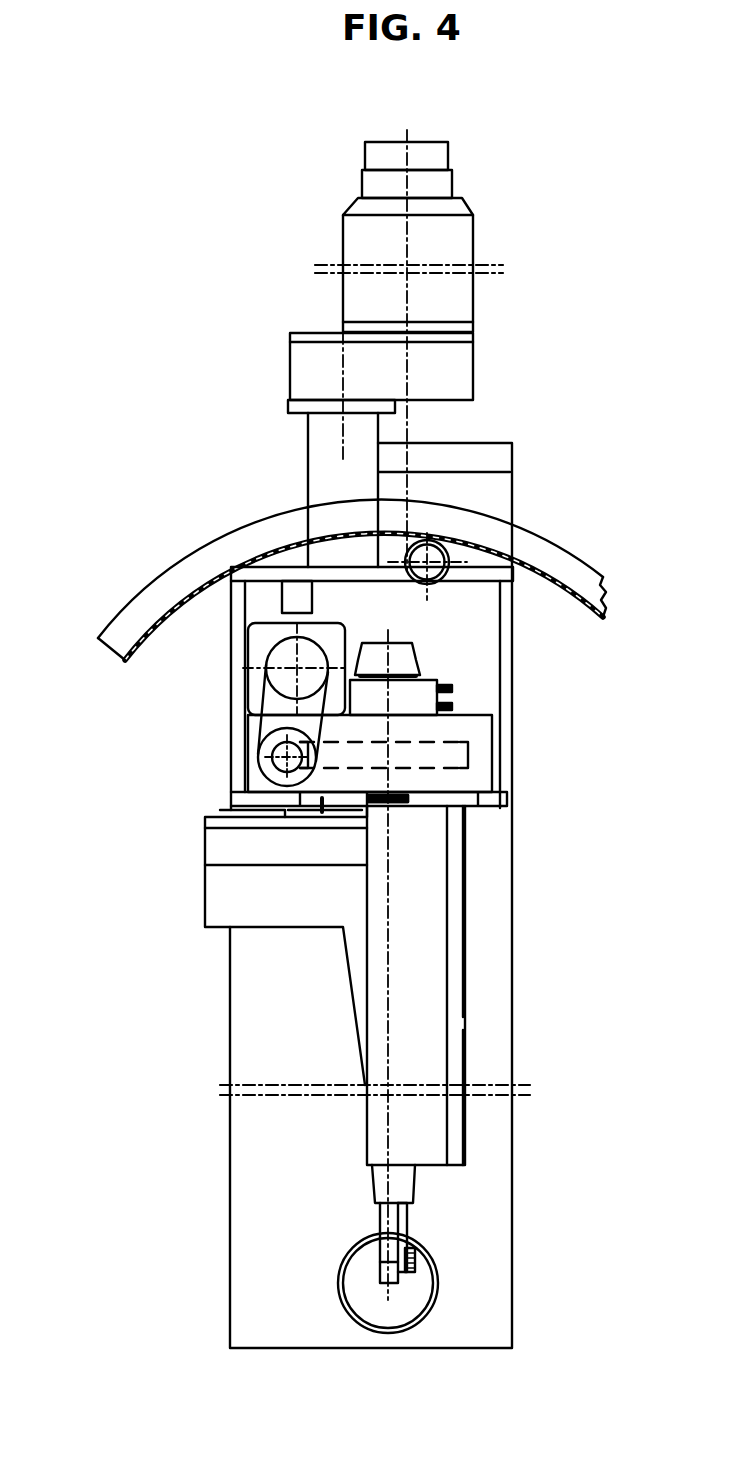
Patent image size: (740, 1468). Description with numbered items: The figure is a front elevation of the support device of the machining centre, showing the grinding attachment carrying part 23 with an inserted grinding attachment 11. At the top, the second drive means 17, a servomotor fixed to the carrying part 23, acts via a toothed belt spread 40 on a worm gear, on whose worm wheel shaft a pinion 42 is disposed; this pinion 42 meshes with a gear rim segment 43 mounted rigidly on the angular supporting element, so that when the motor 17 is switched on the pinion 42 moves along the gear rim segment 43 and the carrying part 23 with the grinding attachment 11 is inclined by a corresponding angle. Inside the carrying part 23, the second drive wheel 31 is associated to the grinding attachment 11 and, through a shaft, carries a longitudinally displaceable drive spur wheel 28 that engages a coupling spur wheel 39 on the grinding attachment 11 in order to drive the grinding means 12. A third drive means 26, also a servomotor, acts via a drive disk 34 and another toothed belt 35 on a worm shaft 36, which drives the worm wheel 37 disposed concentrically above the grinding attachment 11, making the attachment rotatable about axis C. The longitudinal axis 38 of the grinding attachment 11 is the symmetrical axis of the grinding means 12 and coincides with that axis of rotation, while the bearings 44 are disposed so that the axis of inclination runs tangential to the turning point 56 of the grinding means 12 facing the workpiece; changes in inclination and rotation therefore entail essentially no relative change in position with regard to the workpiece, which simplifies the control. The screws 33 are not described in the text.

The second drive means 17 is at (358, 242).
The toothed belt spread 40 is at (448, 370).
The gear rim segment 43 is at (148, 602).
The pinion 42 is at (393, 535).
The grinding attachment carrying part 23 is at (485, 610).
The third drive means 26 is at (263, 642).
The drive disk 34 is at (258, 677).
The toothed belt 35 is at (255, 703).
The worm shaft 36 is at (274, 757).
The second drive wheel 31 is at (418, 657).
The fastening screws 33 is at (420, 698).
The worm wheel 37 is at (465, 753).
The coupling spur wheel 39 is at (408, 798).
The drive spur wheel 28 is at (588, 882).
The longitudinal axis of the grinding attachment 38 is at (392, 973).
The grinding attachment 11 is at (466, 1053).
The grinding means 12 is at (392, 1216).
The bearing 44 is at (427, 1280).
The turning point 56 is at (388, 1285).